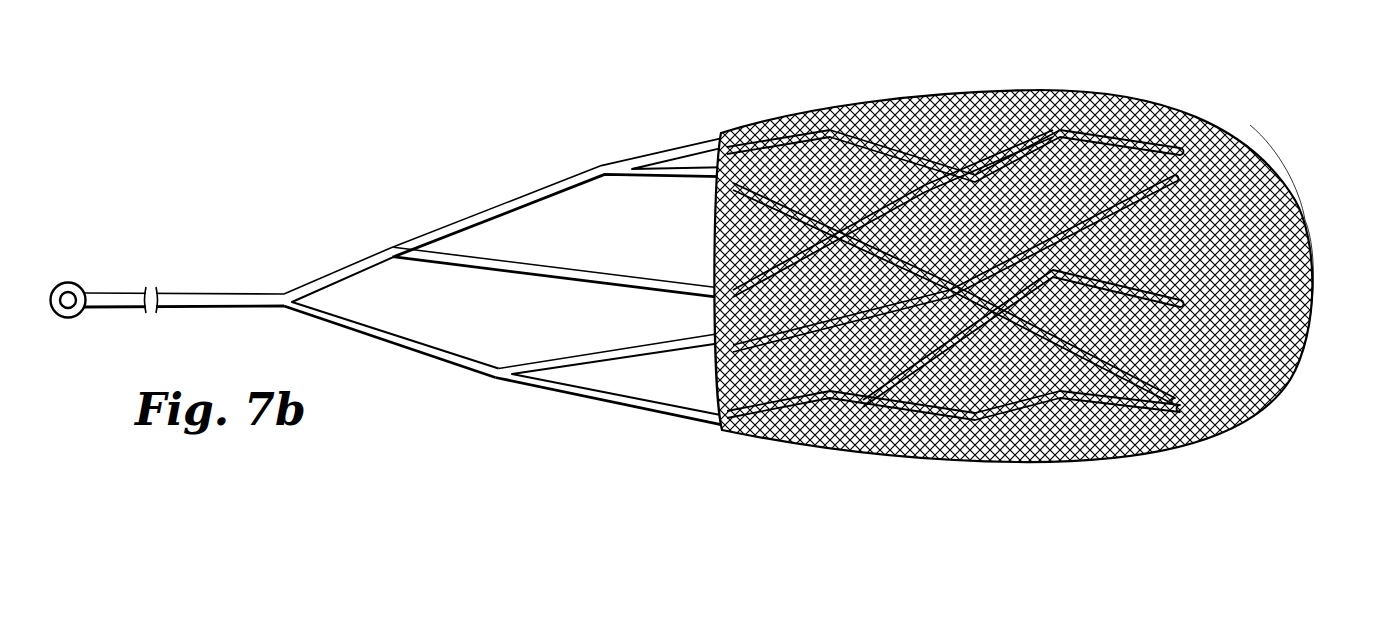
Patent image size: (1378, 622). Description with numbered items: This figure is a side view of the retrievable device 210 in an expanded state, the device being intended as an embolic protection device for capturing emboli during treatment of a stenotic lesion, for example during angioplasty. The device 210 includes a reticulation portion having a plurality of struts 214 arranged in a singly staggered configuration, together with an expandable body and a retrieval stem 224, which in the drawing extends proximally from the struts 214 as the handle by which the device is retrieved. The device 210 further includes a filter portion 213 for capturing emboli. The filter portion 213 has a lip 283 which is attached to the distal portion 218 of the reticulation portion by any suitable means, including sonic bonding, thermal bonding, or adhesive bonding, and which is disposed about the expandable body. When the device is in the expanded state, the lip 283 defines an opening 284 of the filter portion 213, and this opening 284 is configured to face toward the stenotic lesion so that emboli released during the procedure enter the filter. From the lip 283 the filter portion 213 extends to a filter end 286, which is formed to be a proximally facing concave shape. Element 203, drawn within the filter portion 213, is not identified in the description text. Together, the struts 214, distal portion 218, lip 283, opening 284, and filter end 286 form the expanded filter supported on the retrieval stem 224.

The retrievable device 210 is at (379, 136).
The struts 214 is at (316, 283).
The distal portion 218 is at (692, 138).
The retrieval stem 224 is at (130, 296).
The filter portion 213 is at (922, 88).
The frame struts 203 is at (1067, 127).
The lip 283 is at (728, 243).
The opening 284 is at (728, 390).
The filter end 286 is at (1313, 282).